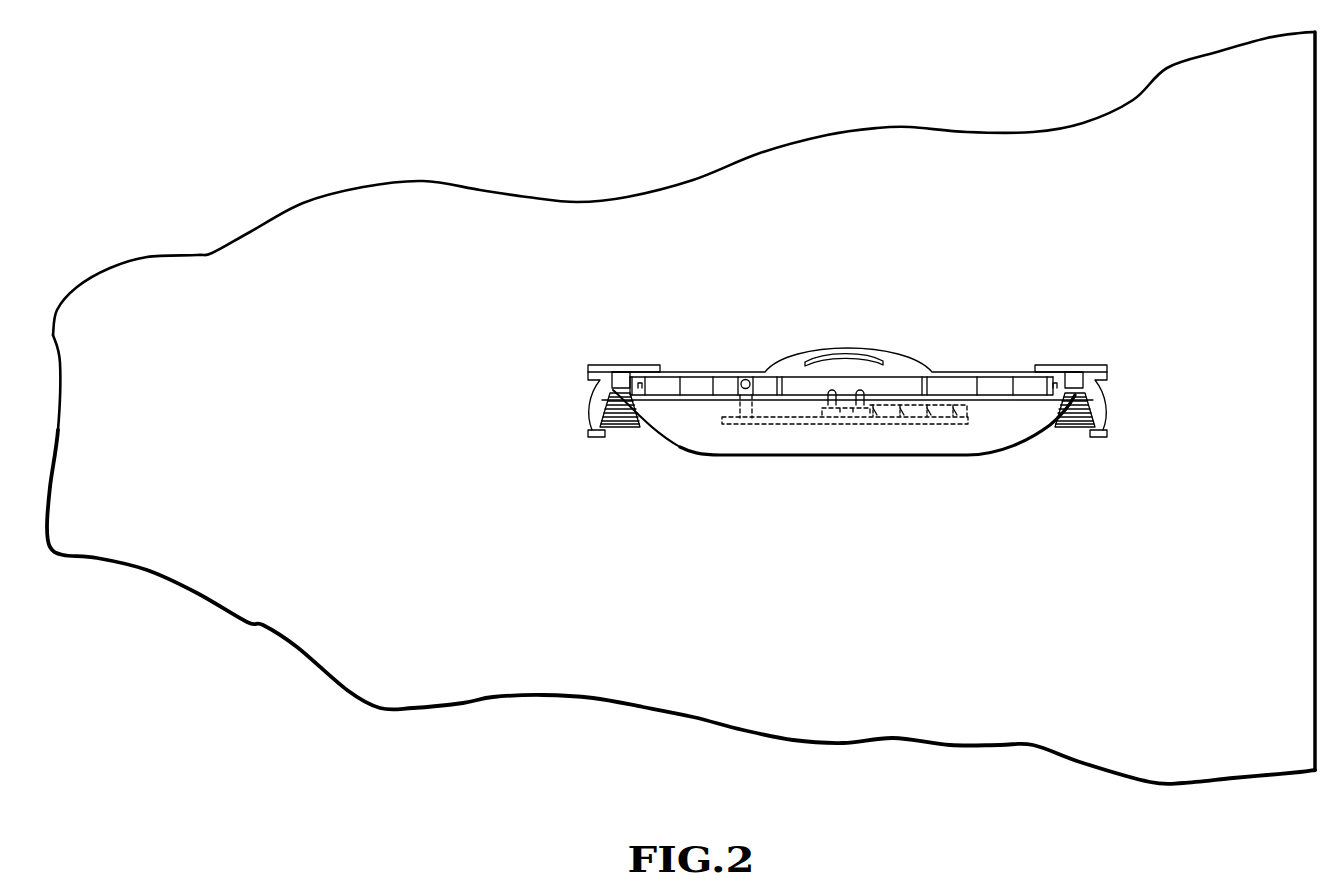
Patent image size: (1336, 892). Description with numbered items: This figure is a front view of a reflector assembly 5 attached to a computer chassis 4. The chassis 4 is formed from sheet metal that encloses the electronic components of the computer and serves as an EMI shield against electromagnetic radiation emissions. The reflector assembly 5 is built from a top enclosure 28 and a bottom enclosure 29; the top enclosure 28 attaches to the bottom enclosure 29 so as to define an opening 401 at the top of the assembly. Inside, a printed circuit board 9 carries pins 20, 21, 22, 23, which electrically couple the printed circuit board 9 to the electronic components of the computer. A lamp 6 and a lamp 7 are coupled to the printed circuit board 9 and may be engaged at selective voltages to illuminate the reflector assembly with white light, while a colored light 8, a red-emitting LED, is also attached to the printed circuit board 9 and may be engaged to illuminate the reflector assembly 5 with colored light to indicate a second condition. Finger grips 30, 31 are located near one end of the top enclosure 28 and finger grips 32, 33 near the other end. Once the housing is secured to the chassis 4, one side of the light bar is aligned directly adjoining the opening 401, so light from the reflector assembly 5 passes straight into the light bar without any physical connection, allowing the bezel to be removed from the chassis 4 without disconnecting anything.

The chassis 4 is at (420, 180).
The reflector assembly 5 is at (848, 367).
The lamp 6 is at (832, 392).
The lamp 7 is at (862, 396).
The colored light 8 is at (742, 378).
The printed circuit board 9 is at (787, 424).
The pin 20 is at (874, 416).
The pin 21 is at (901, 416).
The pin 22 is at (928, 416).
The pin 23 is at (955, 416).
The top enclosure 28 is at (977, 372).
The bottom enclosure 29 is at (730, 453).
The finger grip 30 is at (625, 370).
The finger grip 31 is at (618, 430).
The finger grip 32 is at (1080, 368).
The finger grip 33 is at (1070, 425).
The opening 401 is at (793, 385).